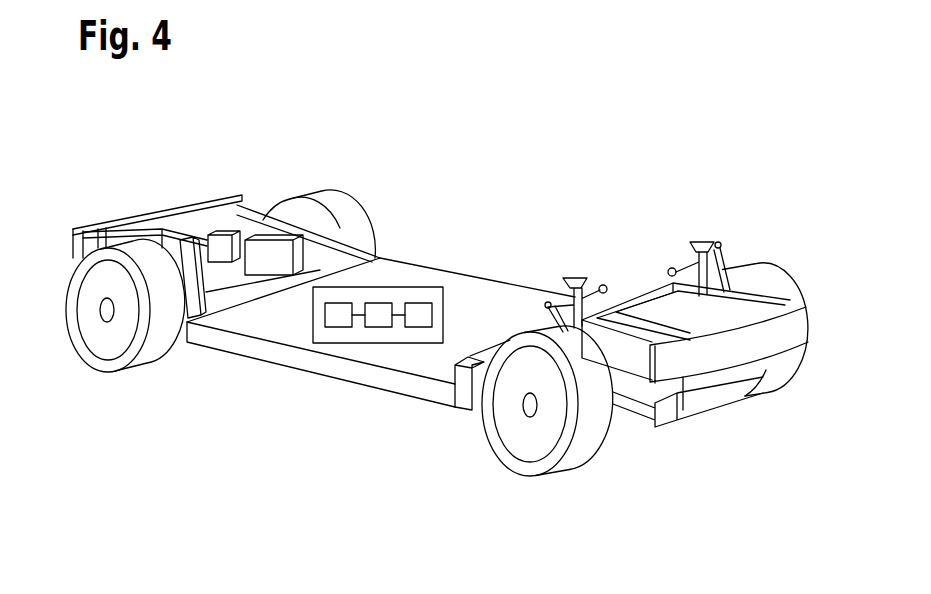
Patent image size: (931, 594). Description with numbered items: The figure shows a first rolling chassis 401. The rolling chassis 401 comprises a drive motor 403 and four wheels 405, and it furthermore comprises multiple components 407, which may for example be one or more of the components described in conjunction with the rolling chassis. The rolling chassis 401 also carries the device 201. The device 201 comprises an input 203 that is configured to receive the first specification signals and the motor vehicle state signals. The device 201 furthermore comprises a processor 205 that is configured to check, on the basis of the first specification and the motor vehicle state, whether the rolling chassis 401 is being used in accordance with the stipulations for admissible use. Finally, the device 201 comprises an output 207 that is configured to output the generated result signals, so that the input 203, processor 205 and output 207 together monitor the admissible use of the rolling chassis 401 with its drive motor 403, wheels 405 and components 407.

The device 201 is at (375, 312).
The input 203 is at (338, 327).
The processor 205 is at (378, 327).
The output 207 is at (418, 303).
The first rolling chassis 401 is at (498, 298).
The drive motor 403 is at (655, 312).
The wheels 405 is at (353, 215).
The components 407 is at (213, 202).